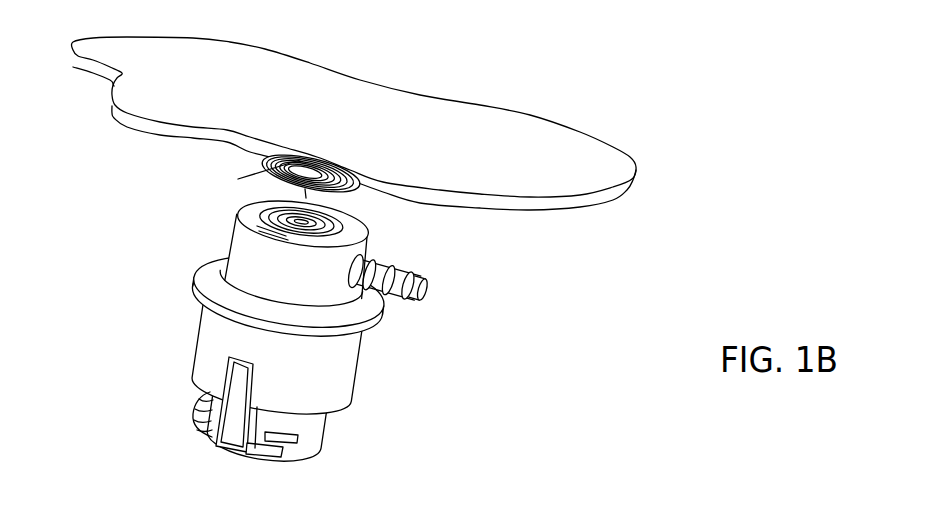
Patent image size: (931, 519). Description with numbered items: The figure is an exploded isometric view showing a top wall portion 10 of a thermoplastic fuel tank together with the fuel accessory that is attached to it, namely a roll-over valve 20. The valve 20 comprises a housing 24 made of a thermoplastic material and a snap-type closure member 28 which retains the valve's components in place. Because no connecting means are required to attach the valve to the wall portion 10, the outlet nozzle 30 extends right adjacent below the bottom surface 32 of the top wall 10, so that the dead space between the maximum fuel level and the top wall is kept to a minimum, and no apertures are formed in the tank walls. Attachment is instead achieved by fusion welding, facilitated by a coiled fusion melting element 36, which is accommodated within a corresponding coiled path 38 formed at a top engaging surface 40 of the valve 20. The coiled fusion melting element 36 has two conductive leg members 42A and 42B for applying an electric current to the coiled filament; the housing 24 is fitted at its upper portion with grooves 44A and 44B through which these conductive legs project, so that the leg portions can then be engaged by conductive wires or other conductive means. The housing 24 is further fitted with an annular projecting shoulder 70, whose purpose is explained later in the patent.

The top wall portion 10 is at (386, 132).
The bottom surface 32 is at (588, 207).
The coiled fusion melting element 36 is at (242, 188).
The conductive leg member 42A is at (263, 161).
The conductive leg member 42B is at (318, 194).
The coiled path 38 is at (295, 253).
The groove 44A is at (252, 210).
The groove 44B is at (286, 224).
The top engaging surface 40 is at (372, 247).
The outlet nozzle 30 is at (430, 296).
The annular projecting shoulder 70 is at (288, 296).
The housing 24 is at (277, 354).
The snap-type closure member 28 is at (266, 424).
The roll-over valve 20 is at (267, 338).